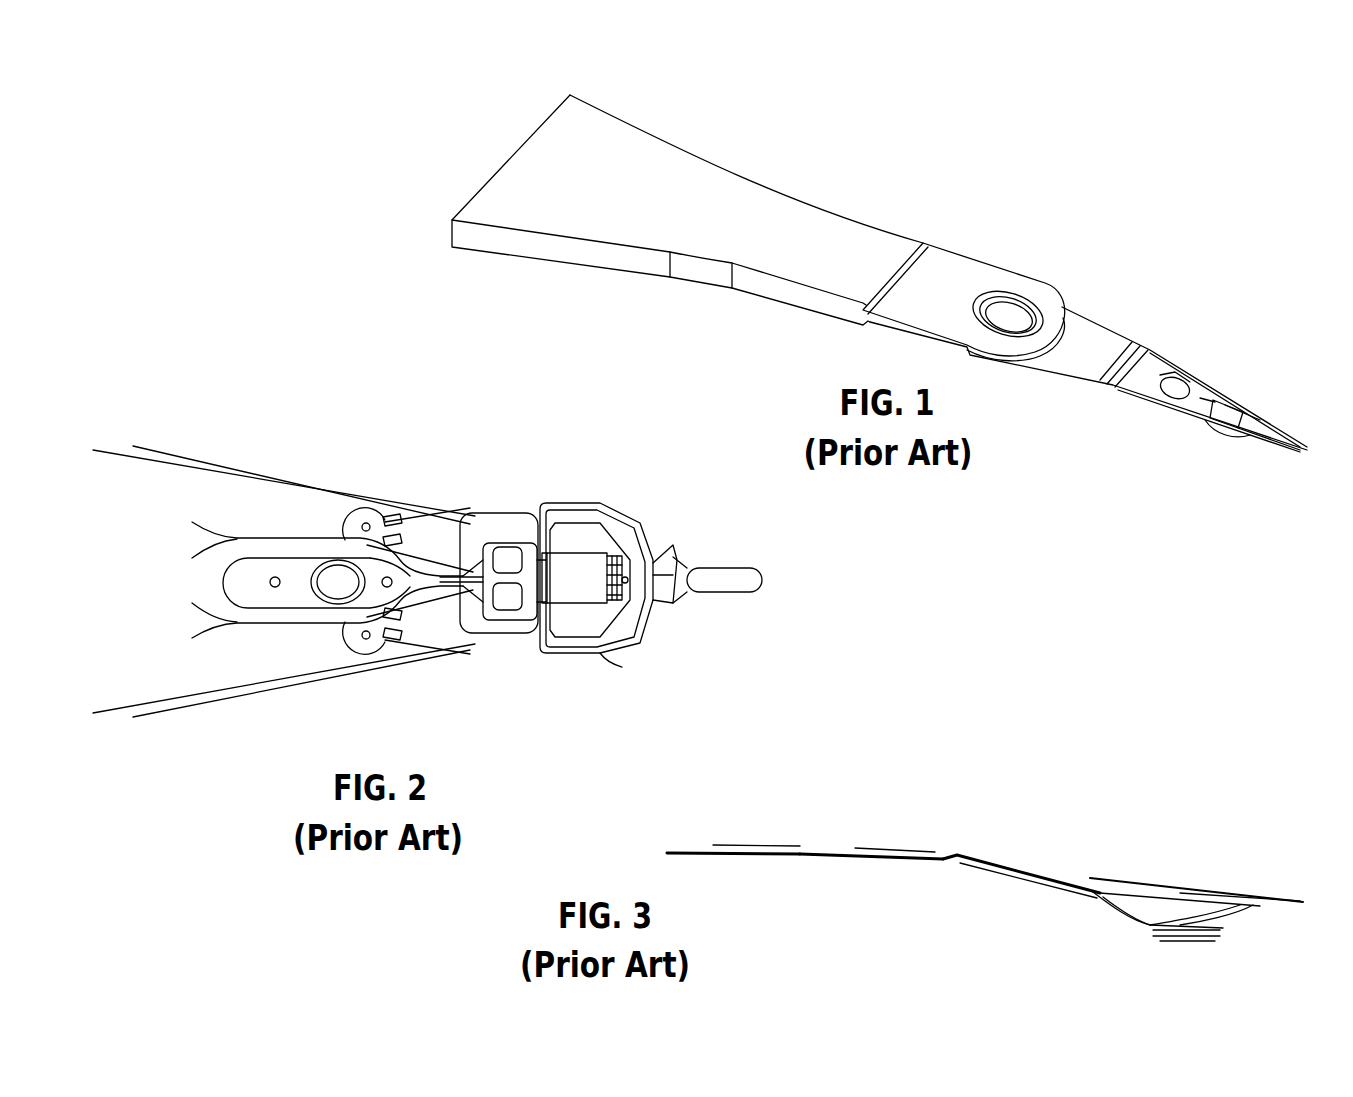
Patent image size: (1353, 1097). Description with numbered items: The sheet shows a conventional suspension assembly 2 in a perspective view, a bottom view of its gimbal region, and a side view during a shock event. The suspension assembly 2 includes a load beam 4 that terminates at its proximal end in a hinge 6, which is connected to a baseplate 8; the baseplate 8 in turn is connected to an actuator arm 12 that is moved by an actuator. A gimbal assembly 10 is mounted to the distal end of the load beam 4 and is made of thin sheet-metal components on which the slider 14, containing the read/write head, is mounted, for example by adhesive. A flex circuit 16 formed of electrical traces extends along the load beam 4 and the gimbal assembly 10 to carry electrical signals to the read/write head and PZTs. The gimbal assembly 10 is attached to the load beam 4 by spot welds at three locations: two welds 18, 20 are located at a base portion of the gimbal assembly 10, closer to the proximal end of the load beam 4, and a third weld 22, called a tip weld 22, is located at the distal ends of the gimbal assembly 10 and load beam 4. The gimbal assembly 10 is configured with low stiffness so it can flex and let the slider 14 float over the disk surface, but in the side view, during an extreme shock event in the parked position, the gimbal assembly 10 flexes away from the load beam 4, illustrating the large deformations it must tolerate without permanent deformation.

In FIG. 1, the suspension assembly 2 is at (879, 311).
In FIG. 1, the load beam 4 is at (1213, 373).
In FIG. 2, the load beam 4 is at (323, 485).
In FIG. 3, the load beam 4 is at (1170, 887).
In FIG. 1, the hinge 6 is at (1148, 352).
In FIG. 3, the hinge 6 is at (942, 860).
In FIG. 1, the baseplate 8 is at (1095, 325).
In FIG. 3, the baseplate 8 is at (920, 855).
In FIG. 1, the gimbal assembly 10 is at (1268, 452).
In FIG. 2, the gimbal assembly 10 is at (553, 653).
In FIG. 3, the gimbal assembly 10 is at (1220, 918).
In FIG. 1, the actuator arm 12 is at (948, 272).
In FIG. 3, the actuator arm 12 is at (817, 855).
In FIG. 2, the slider 14 is at (622, 640).
In FIG. 3, the slider 14 is at (1183, 940).
In FIG. 2, the flex circuit 16 is at (437, 607).
In FIG. 2, the weld location 18 is at (365, 637).
In FIG. 2, the weld location 20 is at (365, 525).
In FIG. 2, the tip weld 22 is at (653, 578).